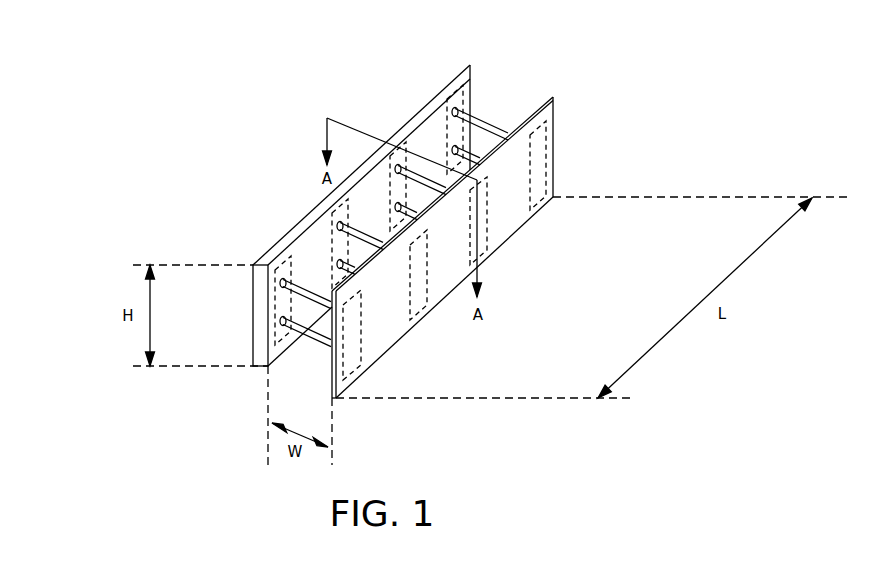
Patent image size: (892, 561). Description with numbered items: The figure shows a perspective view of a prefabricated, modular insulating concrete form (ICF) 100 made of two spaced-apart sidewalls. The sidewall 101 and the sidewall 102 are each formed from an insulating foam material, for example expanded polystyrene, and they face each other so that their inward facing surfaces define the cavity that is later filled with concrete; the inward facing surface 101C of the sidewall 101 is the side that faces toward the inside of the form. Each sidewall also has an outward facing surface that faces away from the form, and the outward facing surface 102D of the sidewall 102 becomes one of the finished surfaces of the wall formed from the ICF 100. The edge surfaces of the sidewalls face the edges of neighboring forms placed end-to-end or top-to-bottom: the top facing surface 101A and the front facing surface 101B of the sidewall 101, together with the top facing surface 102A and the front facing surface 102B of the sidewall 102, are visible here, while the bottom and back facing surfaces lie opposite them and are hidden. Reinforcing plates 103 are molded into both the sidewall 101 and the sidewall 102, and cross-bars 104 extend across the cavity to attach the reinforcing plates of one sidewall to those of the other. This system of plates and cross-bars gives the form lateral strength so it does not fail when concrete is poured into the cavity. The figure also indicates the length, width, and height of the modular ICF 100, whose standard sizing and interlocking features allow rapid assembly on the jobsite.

The insulating concrete form 100 is at (47, 108).
The sidewall 101 is at (277, 243).
The top facing surface 101A is at (402, 128).
The front facing surface 101B is at (257, 327).
The inward facing surface 101C is at (310, 253).
The sidewall 102 is at (555, 128).
The top facing surface 102A is at (532, 110).
The front facing surface 102B is at (330, 357).
The outward facing surface 102D is at (395, 315).
The reinforcing plates 103 is at (458, 102).
The cross-bars 104 is at (480, 127).